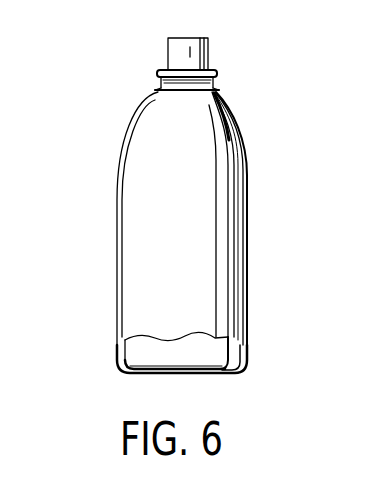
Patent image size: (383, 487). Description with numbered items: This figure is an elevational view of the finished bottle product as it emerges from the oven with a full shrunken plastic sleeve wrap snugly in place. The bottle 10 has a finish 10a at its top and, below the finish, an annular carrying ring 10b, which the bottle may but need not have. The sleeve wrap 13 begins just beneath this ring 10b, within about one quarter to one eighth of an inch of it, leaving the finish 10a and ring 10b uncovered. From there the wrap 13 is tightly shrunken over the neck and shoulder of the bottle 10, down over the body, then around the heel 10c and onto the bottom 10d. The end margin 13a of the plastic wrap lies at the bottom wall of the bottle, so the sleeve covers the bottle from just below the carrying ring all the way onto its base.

The bottle 10 is at (200, 362).
The finish 10a is at (196, 58).
The annular carrying ring 10b is at (218, 76).
The heel 10c is at (118, 352).
The bottom 10d is at (146, 366).
The sleeve wrap 13 is at (236, 146).
The end margin 13a is at (206, 373).